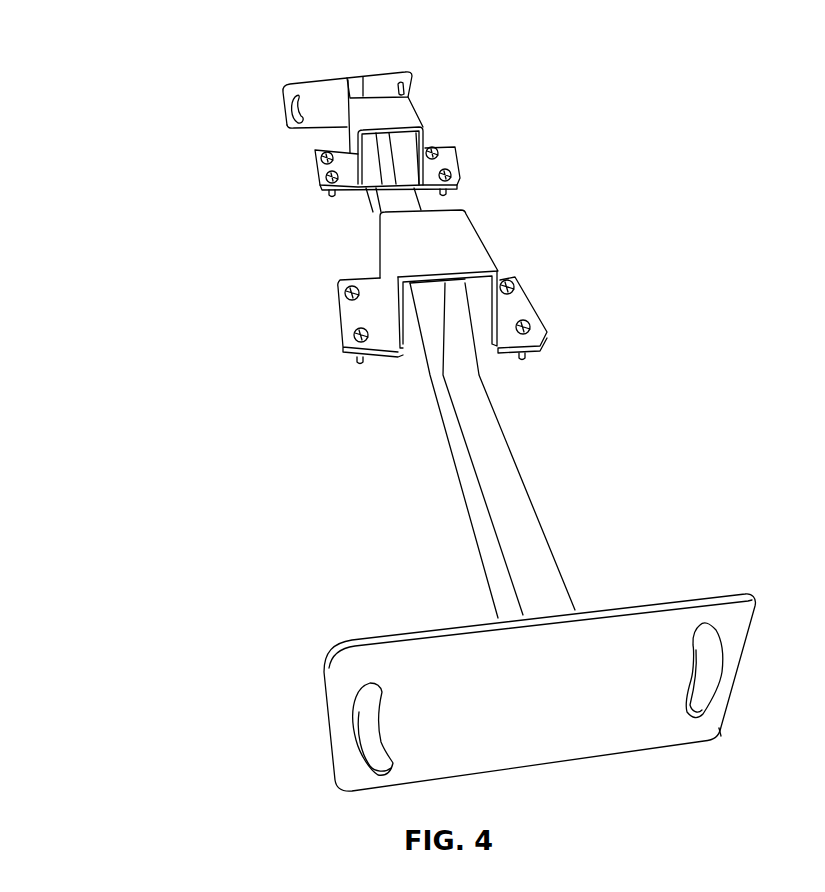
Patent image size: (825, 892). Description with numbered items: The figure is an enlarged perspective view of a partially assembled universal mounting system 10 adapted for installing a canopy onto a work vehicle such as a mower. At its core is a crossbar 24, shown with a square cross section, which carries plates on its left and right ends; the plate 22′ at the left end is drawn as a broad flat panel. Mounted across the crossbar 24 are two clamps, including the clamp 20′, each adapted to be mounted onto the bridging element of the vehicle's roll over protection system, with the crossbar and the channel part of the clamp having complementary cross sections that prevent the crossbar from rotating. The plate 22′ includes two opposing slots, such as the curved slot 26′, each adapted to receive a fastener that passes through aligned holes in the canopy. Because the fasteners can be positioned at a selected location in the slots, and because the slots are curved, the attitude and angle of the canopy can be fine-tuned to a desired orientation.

The universal mounting system 10 is at (130, 93).
The clamp 20′ is at (470, 250).
The crossbar 24 is at (510, 480).
The plate 22′ is at (460, 678).
The slot 26′ is at (362, 727).